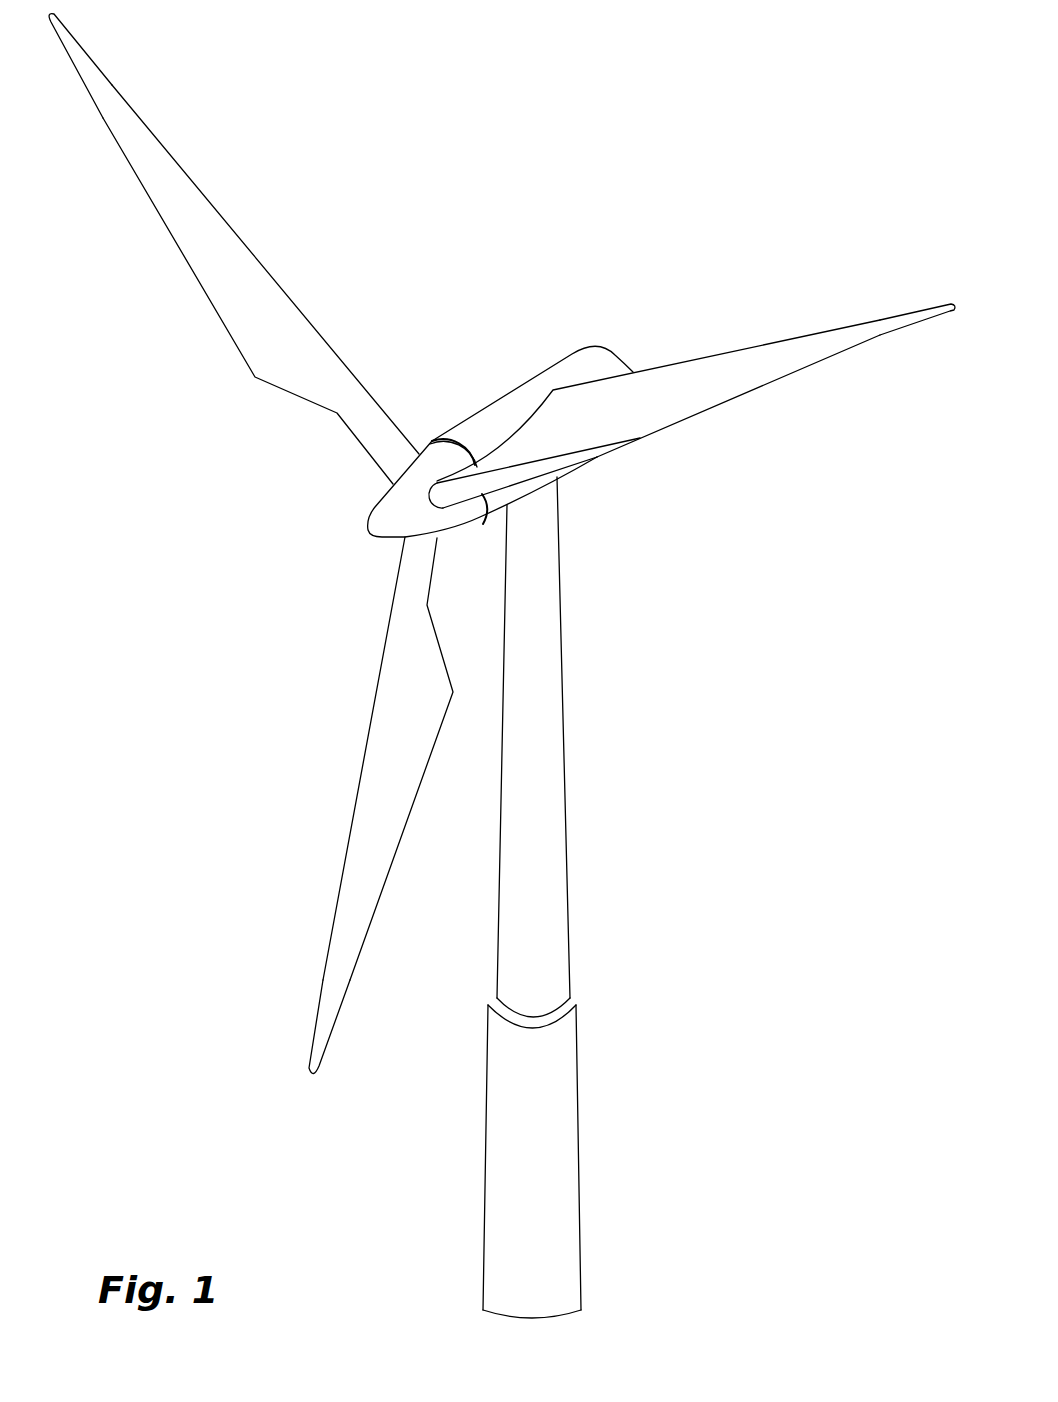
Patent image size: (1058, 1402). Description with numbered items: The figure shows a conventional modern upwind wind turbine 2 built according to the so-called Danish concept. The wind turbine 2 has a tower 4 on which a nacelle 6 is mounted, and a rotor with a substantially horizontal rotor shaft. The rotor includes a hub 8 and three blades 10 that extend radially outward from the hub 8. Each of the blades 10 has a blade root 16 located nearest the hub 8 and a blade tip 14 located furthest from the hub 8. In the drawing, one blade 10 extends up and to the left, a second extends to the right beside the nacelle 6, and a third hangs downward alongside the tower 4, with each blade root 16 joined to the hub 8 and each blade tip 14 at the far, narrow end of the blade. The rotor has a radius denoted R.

The wind turbine 2 is at (680, 828).
The tower 4 is at (553, 740).
The nacelle 6 is at (493, 416).
The hub 8 is at (392, 510).
The blade 10 is at (267, 345).
The blade tip 14 is at (105, 78).
The blade root 16 is at (403, 458).